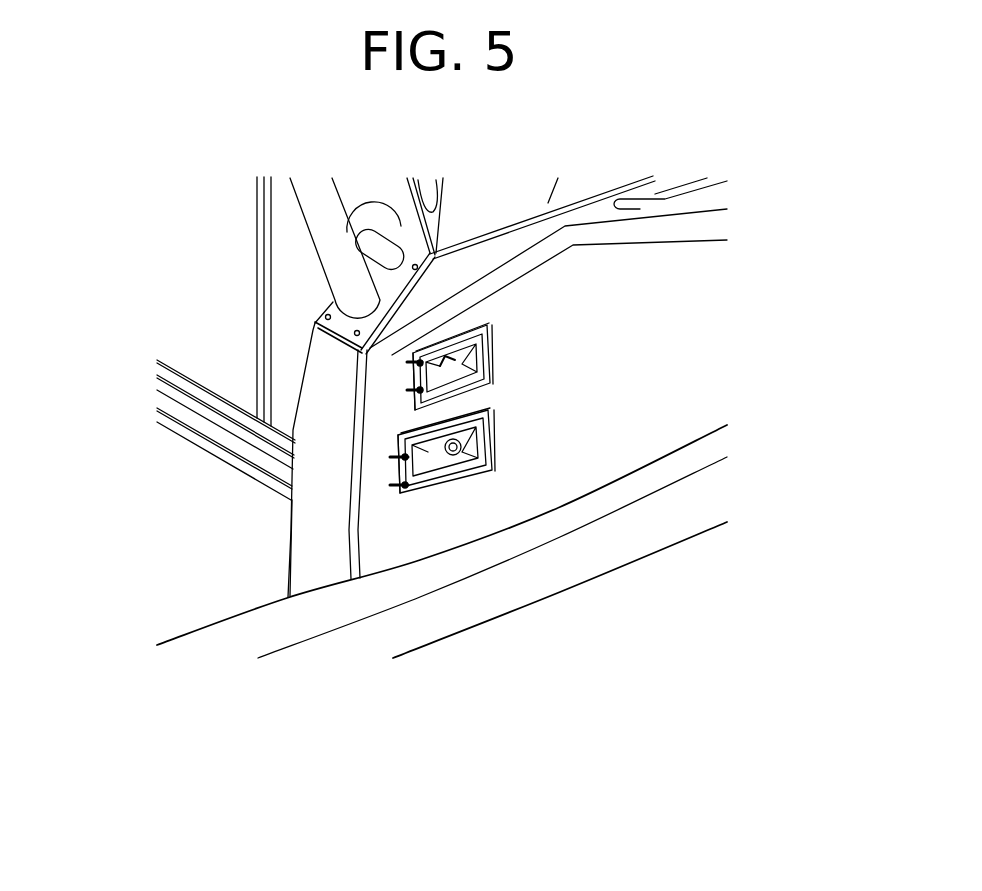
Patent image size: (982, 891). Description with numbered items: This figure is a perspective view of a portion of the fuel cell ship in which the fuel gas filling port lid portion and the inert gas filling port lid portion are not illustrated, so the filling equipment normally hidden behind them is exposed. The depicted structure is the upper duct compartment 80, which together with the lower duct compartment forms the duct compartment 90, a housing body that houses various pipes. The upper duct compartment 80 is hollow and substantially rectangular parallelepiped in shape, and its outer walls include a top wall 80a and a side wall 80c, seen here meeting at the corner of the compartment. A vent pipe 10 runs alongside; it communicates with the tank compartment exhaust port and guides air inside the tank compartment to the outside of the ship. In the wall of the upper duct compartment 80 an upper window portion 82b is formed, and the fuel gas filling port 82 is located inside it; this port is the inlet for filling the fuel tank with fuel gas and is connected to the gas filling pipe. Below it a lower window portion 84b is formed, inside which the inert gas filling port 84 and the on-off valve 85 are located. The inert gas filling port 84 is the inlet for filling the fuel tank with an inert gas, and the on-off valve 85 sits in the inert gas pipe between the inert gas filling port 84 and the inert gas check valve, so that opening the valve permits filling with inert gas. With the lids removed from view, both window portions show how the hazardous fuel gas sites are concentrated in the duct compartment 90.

The vent pipe 10 is at (320, 218).
The upper duct compartment 80 is at (409, 537).
The top wall 80a is at (393, 287).
The side wall 80c is at (322, 508).
The fuel gas filling port 82 is at (608, 326).
The upper window portion 82b is at (490, 370).
The inert gas filling port 84 is at (528, 563).
The lower window portion 84b is at (490, 428).
The on-off valve 85 is at (480, 470).
The duct compartment 90 is at (455, 523).